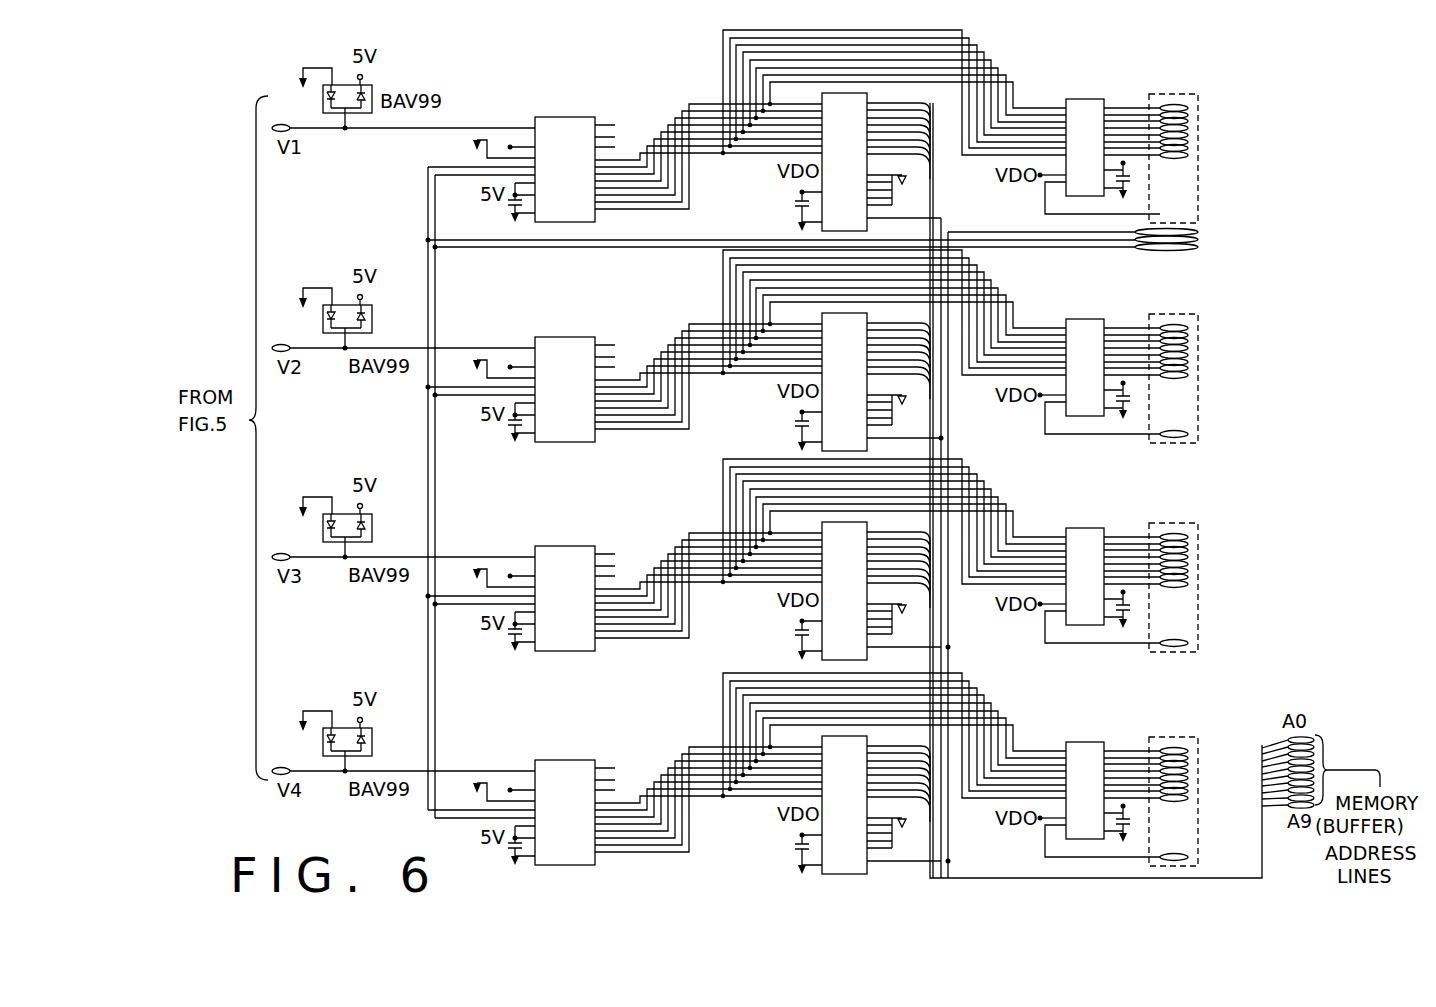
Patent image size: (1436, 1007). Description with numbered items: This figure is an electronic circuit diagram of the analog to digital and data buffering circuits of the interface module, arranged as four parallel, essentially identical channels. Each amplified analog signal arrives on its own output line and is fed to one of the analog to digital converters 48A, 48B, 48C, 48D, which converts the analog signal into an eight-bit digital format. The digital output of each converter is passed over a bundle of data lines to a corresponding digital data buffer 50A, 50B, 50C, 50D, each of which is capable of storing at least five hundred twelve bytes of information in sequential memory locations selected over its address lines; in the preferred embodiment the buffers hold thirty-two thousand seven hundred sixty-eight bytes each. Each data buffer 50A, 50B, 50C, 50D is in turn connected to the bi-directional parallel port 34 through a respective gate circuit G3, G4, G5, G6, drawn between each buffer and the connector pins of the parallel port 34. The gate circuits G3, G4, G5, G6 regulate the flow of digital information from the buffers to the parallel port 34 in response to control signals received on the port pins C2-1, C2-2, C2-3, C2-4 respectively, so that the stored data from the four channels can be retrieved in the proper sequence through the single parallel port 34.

The analog to digital converter 48A is at (547, 170).
The analog to digital converter 48B is at (547, 390).
The analog to digital converter 48C is at (547, 599).
The analog to digital converter 48D is at (547, 813).
The data buffer 50A is at (829, 171).
The data buffer 50B is at (829, 391).
The data buffer 50C is at (829, 600).
The data buffer 50D is at (829, 814).
The gate circuit G3 is at (1072, 155).
The gate circuit G4 is at (1072, 375).
The gate circuit G5 is at (1072, 584).
The gate circuit G6 is at (1072, 798).
The bi-directional parallel port 34 is at (1207, 223).
The port pin C2-1 is at (1190, 866).
The port pin C2-2 is at (1198, 657).
The port pin C2-3 is at (1190, 437).
The port pin C2-4 is at (1200, 239).